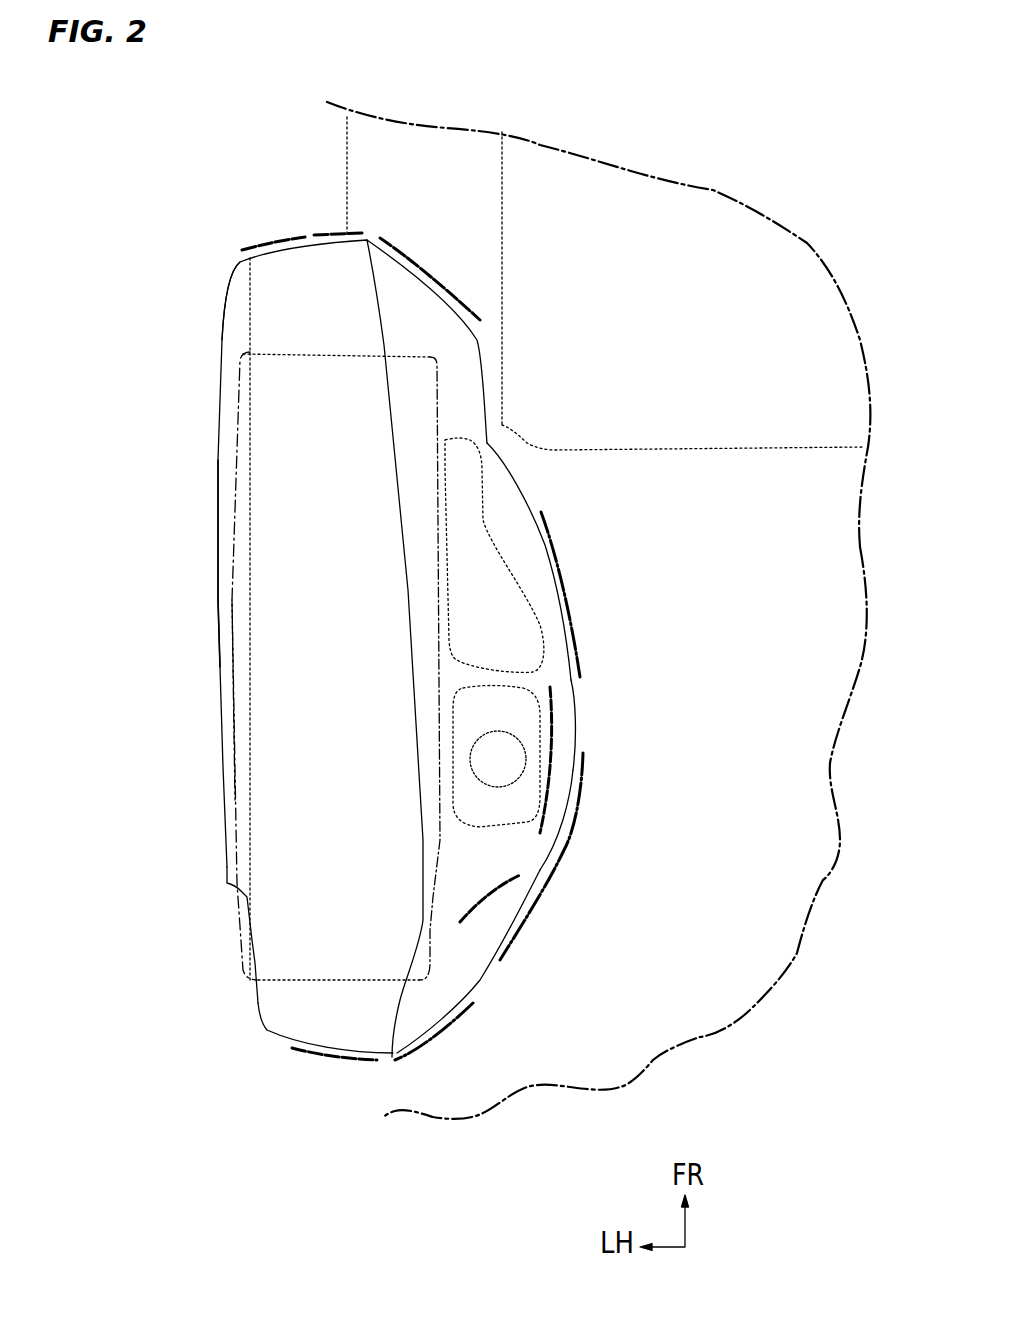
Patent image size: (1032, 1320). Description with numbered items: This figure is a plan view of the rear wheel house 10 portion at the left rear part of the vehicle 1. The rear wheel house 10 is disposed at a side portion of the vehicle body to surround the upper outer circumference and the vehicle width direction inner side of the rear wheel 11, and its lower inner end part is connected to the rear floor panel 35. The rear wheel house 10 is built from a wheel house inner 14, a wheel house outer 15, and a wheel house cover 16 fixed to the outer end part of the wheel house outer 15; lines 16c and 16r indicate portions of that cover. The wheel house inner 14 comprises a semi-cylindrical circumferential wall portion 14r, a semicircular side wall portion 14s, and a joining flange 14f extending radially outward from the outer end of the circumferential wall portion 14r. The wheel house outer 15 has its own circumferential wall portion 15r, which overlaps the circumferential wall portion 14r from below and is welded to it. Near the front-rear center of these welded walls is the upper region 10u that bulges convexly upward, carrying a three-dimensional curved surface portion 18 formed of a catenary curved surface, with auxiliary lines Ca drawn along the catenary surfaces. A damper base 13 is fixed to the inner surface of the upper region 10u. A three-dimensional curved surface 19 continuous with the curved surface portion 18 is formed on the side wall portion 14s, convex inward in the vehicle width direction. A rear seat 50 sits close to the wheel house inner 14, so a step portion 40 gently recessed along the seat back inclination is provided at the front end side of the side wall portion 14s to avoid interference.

The vehicle 1 is at (716, 155).
The rear wheel house 10 is at (250, 228).
The upper region 10u is at (428, 660).
The rear wheel 11 is at (335, 980).
The damper base 13 is at (510, 845).
The wheel house inner 14 is at (570, 598).
The joining flange 14f is at (403, 527).
The circumferential wall portion 14r is at (462, 902).
The side wall portion 14s is at (577, 723).
The wheel house outer 15 is at (260, 1037).
The circumferential wall portion 15r is at (283, 337).
The wheel house cover 16 is at (212, 880).
The front edge member center 16c is at (218, 610).
The front edge member rear 16r is at (240, 697).
The three-dimensional curved surface portion 18 is at (513, 793).
The three-dimensional curved surface 19 is at (563, 702).
The rear floor panel 35 is at (772, 932).
The step portion 40 is at (493, 433).
The rear seat 50 is at (502, 188).
The auxiliary line Ca is at (318, 228).